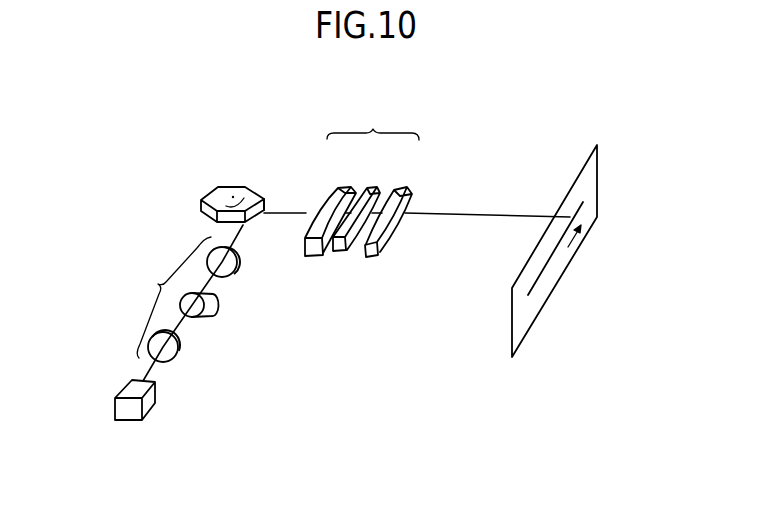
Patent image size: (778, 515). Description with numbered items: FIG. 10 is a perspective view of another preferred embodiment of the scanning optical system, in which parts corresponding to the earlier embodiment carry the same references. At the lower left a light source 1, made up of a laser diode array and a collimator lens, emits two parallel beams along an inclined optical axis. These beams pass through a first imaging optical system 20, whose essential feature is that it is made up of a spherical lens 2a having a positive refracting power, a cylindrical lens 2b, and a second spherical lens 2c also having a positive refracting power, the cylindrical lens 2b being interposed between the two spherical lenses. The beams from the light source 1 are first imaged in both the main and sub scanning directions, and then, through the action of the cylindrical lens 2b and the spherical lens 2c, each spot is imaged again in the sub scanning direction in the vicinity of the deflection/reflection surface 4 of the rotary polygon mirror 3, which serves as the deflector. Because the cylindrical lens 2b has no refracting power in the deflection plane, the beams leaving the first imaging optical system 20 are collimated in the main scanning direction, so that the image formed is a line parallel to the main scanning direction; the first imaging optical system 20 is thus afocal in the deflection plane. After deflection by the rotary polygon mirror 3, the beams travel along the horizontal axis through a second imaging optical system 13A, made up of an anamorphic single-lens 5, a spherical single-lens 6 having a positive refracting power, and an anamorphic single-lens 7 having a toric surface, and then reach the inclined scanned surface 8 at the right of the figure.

The light source 1 is at (155, 402).
The spherical lens 2a is at (172, 355).
The cylindrical lens 2b is at (213, 310).
The spherical lens 2c is at (233, 270).
The first imaging optical system 20 is at (206, 309).
The rotary polygon mirror 3 is at (215, 188).
The deflection/reflection surface 4 is at (261, 198).
The anamorphic single-lens 5 is at (346, 186).
The spherical single-lens 6 is at (377, 188).
The anamorphic single-lens 7 is at (405, 188).
The second imaging optical system 13A is at (362, 179).
The scanned surface / photosensitive member 8 is at (577, 190).